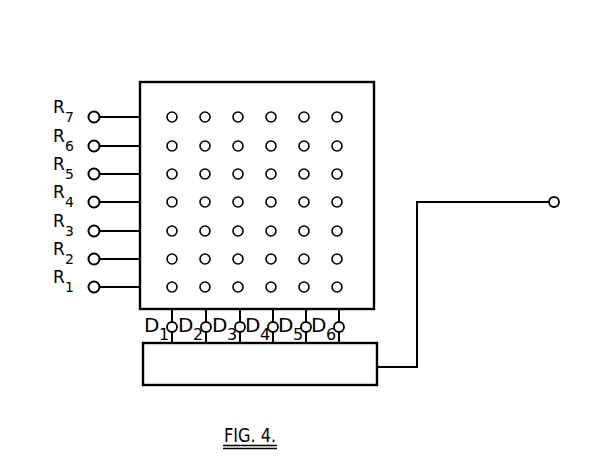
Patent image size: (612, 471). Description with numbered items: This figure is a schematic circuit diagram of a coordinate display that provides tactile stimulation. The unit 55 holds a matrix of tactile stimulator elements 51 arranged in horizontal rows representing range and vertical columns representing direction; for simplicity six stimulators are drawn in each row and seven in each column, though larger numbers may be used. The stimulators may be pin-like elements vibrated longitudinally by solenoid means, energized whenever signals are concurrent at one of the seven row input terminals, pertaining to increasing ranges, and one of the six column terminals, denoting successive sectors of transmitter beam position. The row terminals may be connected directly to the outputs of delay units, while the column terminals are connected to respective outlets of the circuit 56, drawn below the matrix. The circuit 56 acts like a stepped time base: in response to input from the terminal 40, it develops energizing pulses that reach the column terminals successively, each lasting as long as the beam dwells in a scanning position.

The input terminal 40 is at (553, 196).
The tactile stimulator elements 51 is at (241, 96).
The unit 55 is at (297, 72).
The circuit 56 is at (260, 364).